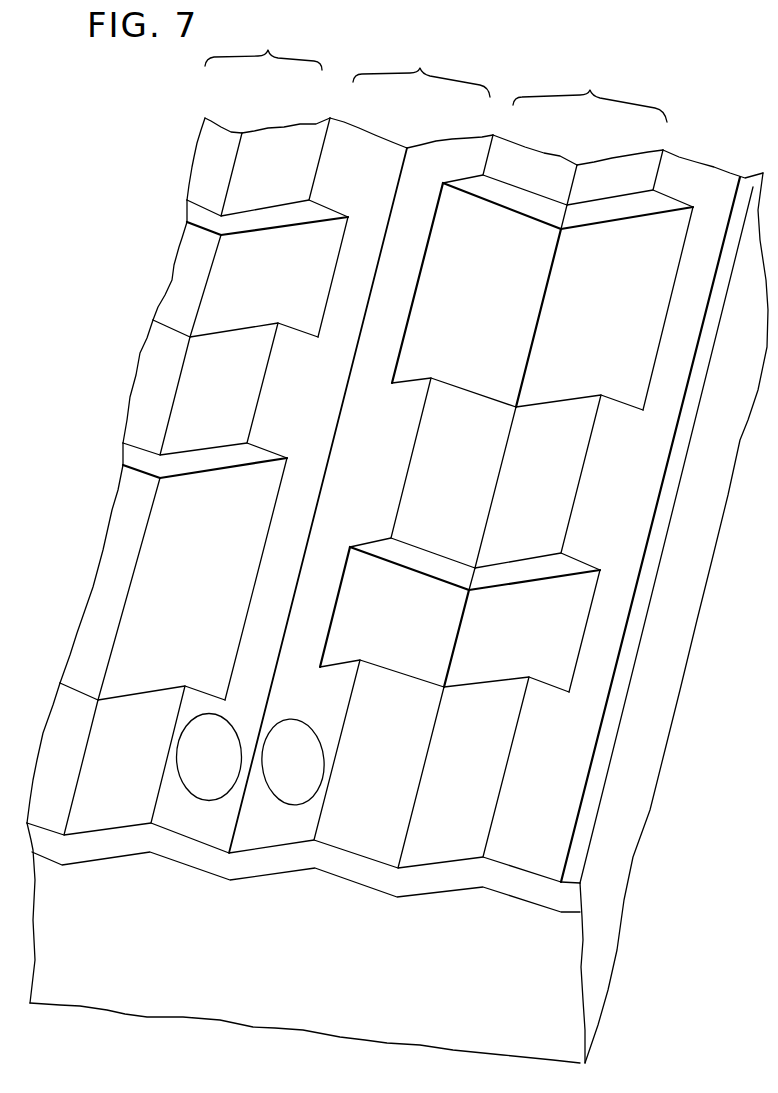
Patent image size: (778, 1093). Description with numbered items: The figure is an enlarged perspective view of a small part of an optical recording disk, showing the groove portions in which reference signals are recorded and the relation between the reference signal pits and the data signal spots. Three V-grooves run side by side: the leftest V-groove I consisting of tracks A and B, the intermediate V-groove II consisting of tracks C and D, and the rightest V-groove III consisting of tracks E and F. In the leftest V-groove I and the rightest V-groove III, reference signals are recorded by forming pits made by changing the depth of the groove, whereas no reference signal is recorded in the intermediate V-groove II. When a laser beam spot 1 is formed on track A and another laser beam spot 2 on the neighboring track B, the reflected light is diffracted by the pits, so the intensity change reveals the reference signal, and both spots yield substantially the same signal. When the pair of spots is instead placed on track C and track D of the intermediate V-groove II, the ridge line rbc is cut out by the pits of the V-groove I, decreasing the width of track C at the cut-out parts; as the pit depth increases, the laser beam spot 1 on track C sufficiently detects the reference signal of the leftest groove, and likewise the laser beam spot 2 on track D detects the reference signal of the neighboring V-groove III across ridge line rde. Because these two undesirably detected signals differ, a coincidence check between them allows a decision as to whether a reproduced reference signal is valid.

The laser beam spot 1 is at (197, 748).
The laser beam spot 2 is at (312, 760).
The track A is at (220, 137).
The track B is at (284, 138).
The track C is at (367, 143).
The track D is at (447, 157).
The track E is at (530, 164).
The track F is at (612, 166).
The leftest V-groove I is at (263, 46).
The intermediate V-groove II is at (421, 71).
The rightest V-groove III is at (590, 94).
The ridge line rbc is at (254, 428).
The ridge line rde is at (423, 450).